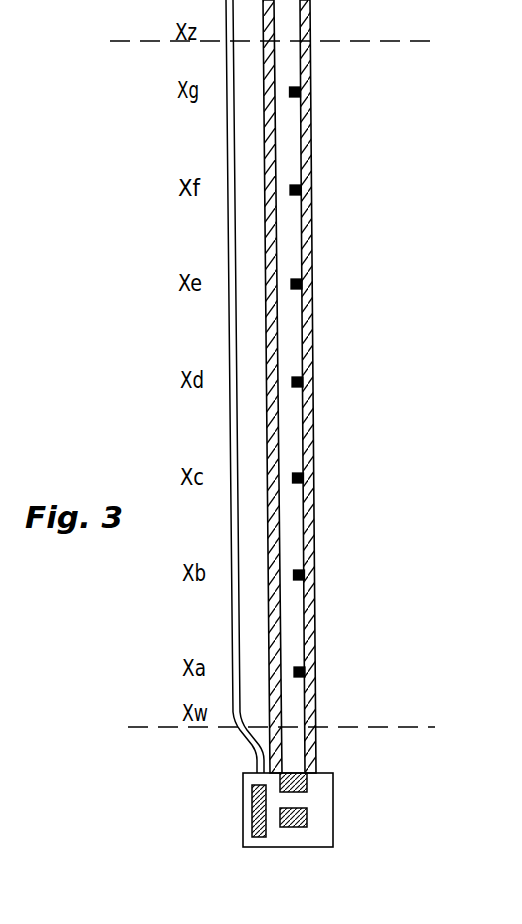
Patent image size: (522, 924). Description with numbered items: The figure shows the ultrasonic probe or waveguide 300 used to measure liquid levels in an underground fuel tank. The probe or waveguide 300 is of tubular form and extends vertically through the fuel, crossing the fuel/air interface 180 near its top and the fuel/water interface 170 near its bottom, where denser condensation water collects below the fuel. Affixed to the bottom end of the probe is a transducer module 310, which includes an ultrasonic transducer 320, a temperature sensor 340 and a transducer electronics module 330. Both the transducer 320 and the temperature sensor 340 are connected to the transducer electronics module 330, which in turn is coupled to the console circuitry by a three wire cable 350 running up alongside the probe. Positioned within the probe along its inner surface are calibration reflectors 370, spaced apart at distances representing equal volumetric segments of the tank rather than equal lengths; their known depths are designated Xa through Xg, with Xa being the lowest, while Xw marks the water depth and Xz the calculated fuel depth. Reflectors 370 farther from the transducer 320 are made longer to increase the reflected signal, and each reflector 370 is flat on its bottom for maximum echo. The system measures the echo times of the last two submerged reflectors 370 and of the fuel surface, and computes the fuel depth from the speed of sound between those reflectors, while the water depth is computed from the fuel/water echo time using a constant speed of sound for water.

The fuel/air interface 180 is at (377, 40).
The fuel/water interface 170 is at (390, 727).
The ultrasonic probe or waveguide 300 is at (311, 150).
The three wire cable 350 is at (228, 240).
The calibration reflectors 370 is at (302, 88).
The transducer module 310 is at (243, 795).
The ultrasonic transducer 320 is at (307, 788).
The transducer electronics module 330 is at (257, 822).
The temperature sensor 340 is at (307, 822).